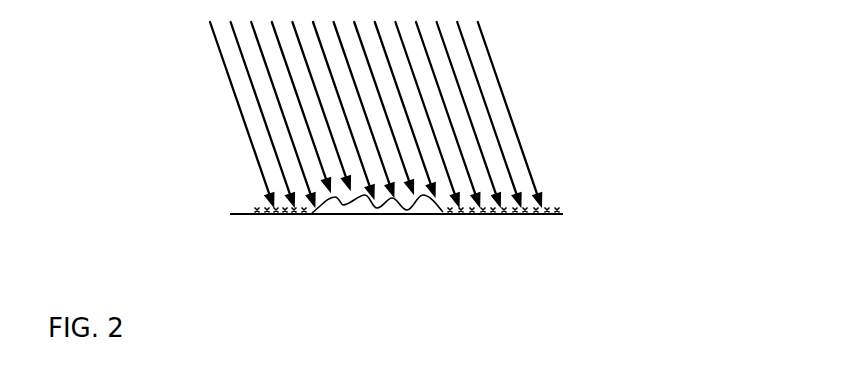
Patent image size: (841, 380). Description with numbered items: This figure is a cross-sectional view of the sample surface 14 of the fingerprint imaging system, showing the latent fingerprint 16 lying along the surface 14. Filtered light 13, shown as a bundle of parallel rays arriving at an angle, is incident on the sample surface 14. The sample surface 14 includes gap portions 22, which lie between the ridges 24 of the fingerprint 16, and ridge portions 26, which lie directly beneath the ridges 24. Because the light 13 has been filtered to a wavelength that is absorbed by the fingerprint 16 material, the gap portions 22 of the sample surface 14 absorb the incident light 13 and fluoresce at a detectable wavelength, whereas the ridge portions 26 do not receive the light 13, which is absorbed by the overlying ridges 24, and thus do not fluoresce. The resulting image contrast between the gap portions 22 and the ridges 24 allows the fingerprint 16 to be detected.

The light 13 is at (510, 108).
The sample surface 14 is at (239, 206).
The latent fingerprint 16 is at (352, 213).
The gap portions 22 is at (278, 213).
The ridges 24 is at (420, 213).
The ridge portions 26 is at (387, 213).